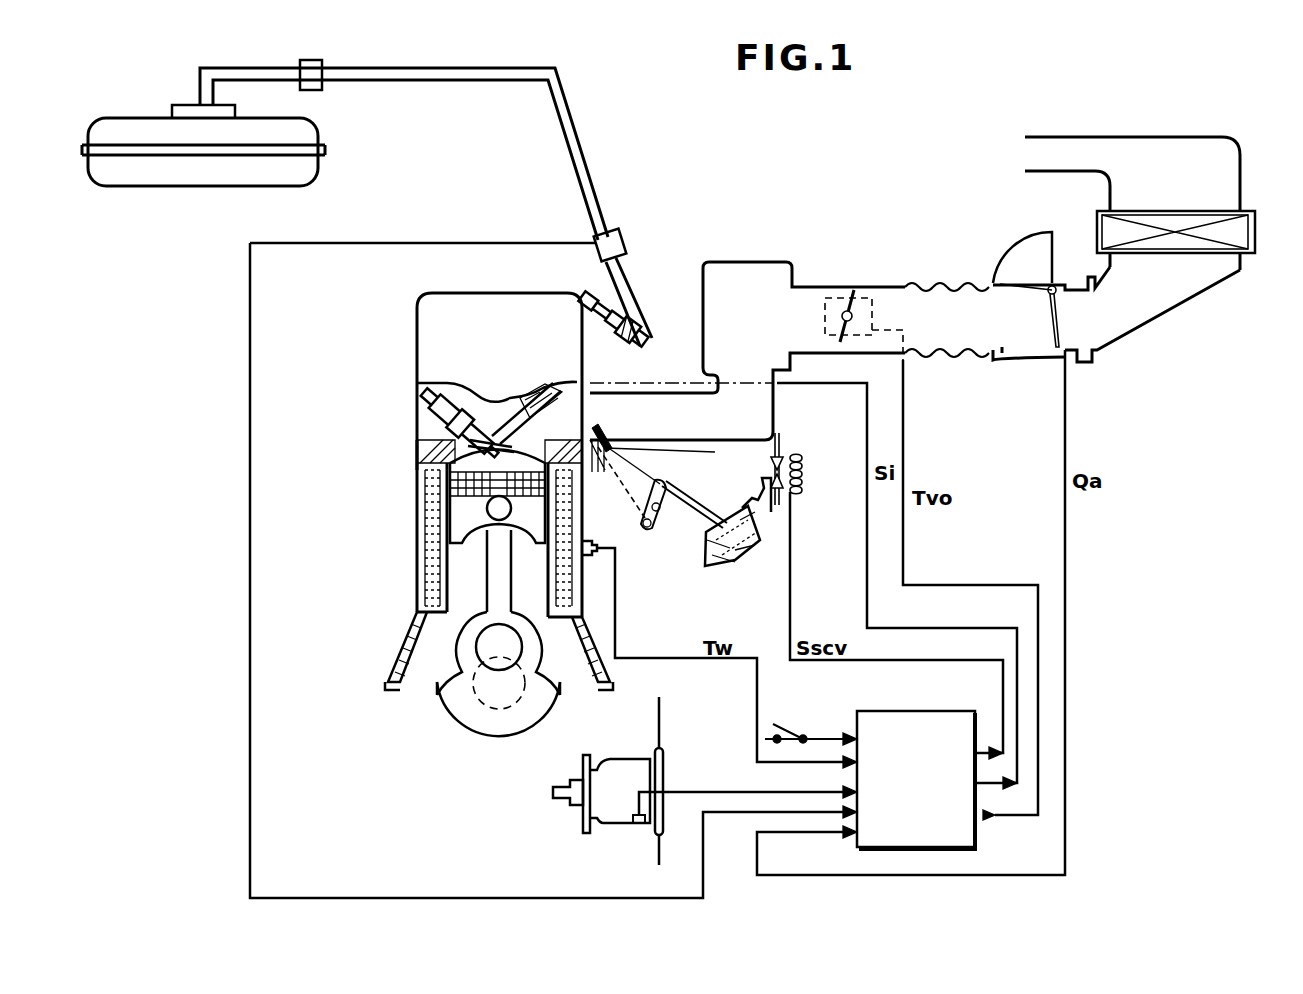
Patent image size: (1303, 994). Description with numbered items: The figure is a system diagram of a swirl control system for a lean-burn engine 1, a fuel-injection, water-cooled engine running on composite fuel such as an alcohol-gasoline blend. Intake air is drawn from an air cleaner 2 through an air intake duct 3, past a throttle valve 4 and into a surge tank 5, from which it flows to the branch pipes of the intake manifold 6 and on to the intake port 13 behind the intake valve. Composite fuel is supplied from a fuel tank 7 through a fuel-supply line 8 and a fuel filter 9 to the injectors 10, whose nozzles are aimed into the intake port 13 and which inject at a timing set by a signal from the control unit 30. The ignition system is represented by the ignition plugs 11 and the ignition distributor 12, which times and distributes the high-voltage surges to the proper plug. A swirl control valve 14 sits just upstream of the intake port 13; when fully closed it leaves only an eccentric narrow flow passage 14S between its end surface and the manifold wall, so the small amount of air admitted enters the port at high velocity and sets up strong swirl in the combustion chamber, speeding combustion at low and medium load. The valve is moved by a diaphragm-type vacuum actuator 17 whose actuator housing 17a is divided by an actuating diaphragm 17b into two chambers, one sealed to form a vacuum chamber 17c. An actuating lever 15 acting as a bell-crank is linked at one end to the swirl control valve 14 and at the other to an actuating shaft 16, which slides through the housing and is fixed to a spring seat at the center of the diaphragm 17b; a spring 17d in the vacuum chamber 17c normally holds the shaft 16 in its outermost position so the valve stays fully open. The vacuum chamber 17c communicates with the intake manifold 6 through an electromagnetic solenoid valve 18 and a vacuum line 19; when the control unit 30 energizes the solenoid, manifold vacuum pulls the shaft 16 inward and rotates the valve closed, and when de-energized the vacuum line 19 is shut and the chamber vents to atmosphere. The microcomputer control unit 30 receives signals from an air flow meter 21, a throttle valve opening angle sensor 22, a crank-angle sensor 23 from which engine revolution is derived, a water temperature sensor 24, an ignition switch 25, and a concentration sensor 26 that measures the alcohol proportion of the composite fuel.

The engine 1 is at (385, 636).
The air cleaner 2 is at (1250, 232).
The air intake duct 3 is at (905, 285).
The throttle valve 4 is at (845, 300).
The surge tank 5 is at (744, 262).
The intake manifold 6 is at (743, 442).
The fuel tank 7 is at (330, 146).
The fuel-supply line 8 is at (245, 68).
The fuel filter 9 is at (322, 62).
The injectors 10 is at (610, 355).
The ignition plugs 11 is at (428, 410).
The ignition distributor 12 is at (598, 826).
The intake port 13 is at (548, 386).
The swirl control valve 14 is at (612, 432).
The narrow flow passage 14S is at (632, 395).
The actuating lever 15 is at (660, 527).
The actuating shaft 16 is at (700, 515).
The vacuum actuator 17 is at (726, 568).
The actuator housing 17a is at (708, 544).
The actuating diaphragm 17b is at (716, 562).
The vacuum chamber 17c is at (758, 540).
The spring 17d is at (746, 552).
The electromagnetic solenoid valve 18 is at (805, 477).
The vacuum line 19 is at (782, 447).
The air flow meter 21 is at (1052, 322).
The throttle valve opening angle sensor 22 is at (880, 300).
The crank-angle sensor 23 is at (637, 826).
The water temperature sensor 24 is at (595, 548).
The ignition switch 25 is at (790, 728).
The concentration sensor 26 is at (622, 240).
The control unit 30 is at (977, 835).